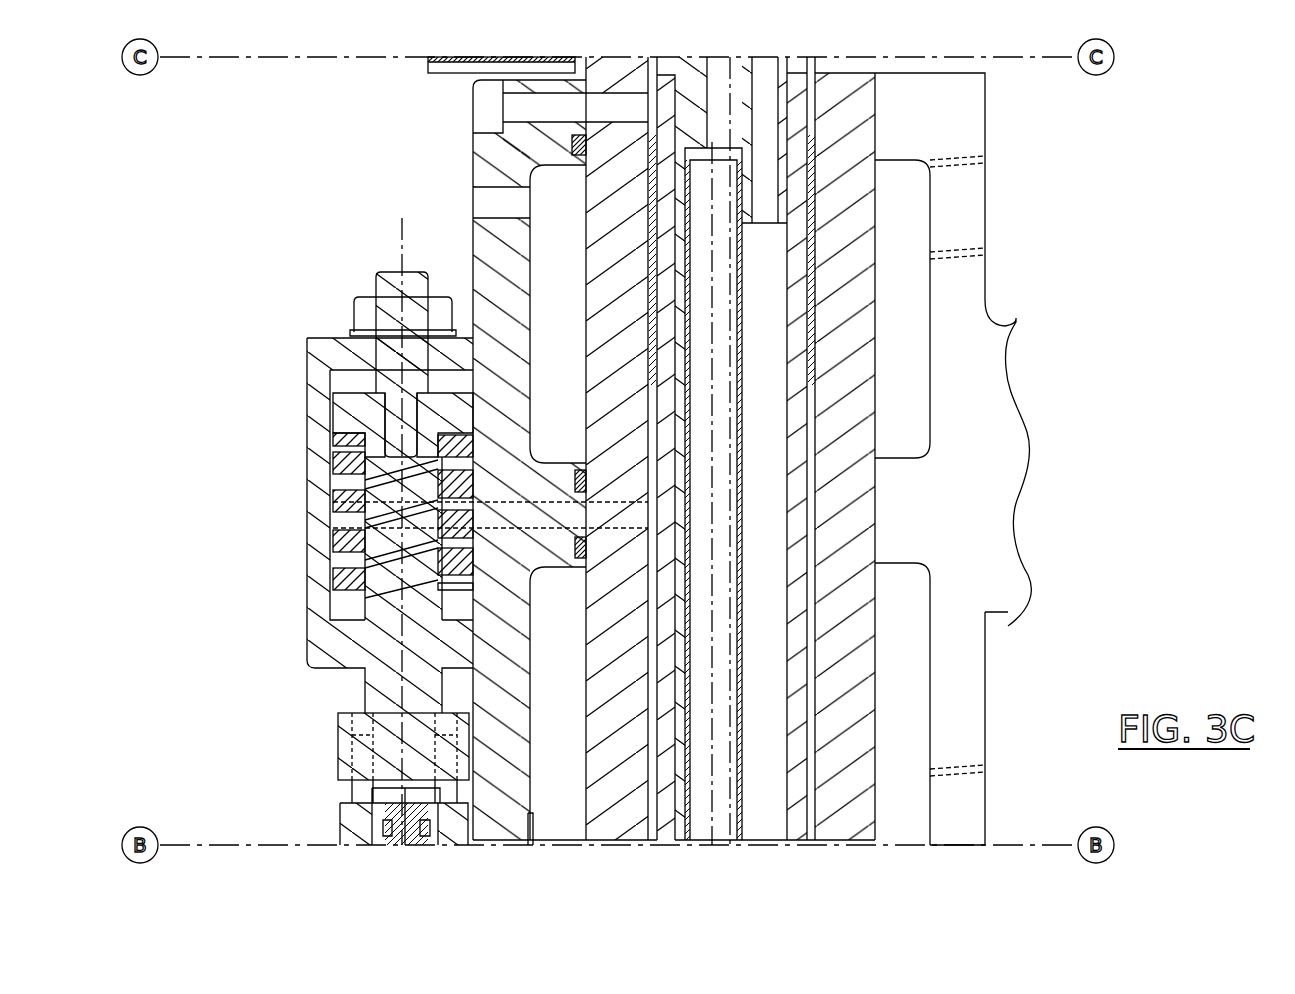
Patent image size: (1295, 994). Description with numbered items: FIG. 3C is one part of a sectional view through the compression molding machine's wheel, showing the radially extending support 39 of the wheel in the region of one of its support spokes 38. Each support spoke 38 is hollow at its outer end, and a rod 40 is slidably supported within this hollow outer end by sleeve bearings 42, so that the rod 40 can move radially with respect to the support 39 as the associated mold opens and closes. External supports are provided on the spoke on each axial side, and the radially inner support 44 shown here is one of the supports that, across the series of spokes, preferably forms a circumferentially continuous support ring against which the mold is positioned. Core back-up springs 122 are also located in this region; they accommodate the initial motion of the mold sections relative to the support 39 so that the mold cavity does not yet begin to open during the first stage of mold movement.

The support spoke 38 is at (857, 183).
The sleeve bearing 42 is at (812, 253).
The rod 40 is at (795, 315).
The support 39 is at (994, 322).
The radially inner support 44 is at (316, 553).
The core back-up spring 122 is at (343, 460).